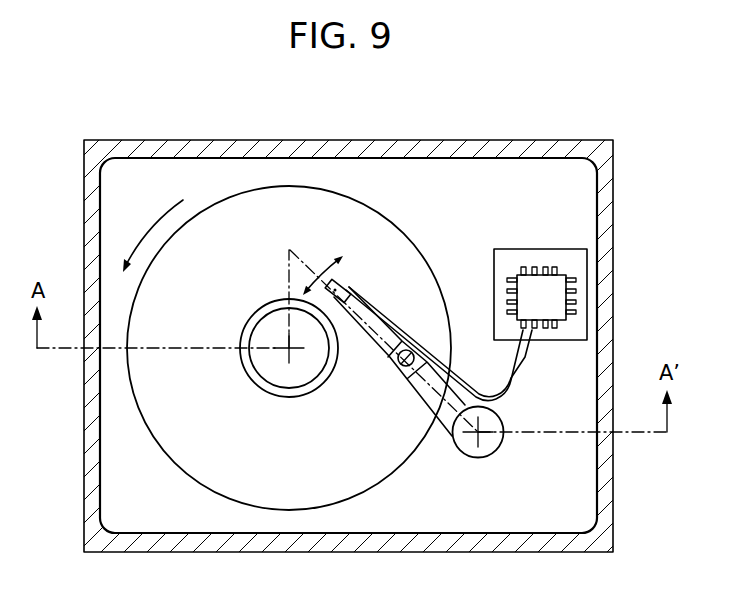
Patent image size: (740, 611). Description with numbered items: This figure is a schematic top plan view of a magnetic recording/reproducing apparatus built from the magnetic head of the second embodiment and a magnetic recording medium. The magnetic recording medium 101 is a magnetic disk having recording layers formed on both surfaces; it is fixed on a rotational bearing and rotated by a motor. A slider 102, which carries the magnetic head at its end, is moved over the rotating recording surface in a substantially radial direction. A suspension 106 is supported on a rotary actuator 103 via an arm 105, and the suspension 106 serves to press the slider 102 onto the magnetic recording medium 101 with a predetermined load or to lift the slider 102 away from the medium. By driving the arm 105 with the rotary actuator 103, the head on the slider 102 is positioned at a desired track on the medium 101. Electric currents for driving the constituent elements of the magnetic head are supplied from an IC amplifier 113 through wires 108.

The magnetic recording medium 101 is at (286, 190).
The slider 102 is at (350, 283).
The rotary actuator 103 is at (470, 457).
The arm 105 is at (420, 397).
The suspension 106 is at (372, 338).
The wires 108 is at (527, 357).
The IC amplifier 113 is at (563, 277).